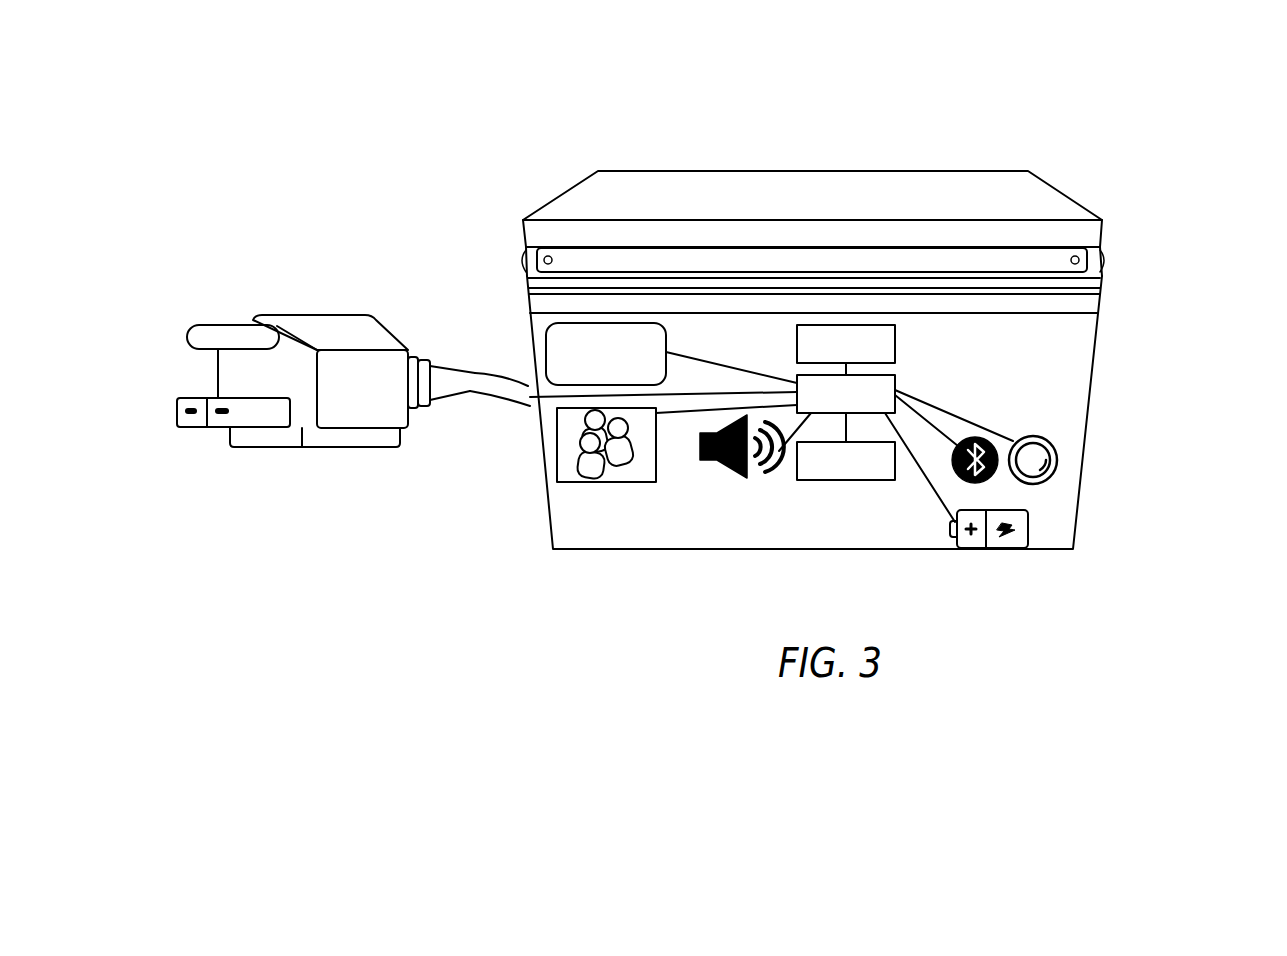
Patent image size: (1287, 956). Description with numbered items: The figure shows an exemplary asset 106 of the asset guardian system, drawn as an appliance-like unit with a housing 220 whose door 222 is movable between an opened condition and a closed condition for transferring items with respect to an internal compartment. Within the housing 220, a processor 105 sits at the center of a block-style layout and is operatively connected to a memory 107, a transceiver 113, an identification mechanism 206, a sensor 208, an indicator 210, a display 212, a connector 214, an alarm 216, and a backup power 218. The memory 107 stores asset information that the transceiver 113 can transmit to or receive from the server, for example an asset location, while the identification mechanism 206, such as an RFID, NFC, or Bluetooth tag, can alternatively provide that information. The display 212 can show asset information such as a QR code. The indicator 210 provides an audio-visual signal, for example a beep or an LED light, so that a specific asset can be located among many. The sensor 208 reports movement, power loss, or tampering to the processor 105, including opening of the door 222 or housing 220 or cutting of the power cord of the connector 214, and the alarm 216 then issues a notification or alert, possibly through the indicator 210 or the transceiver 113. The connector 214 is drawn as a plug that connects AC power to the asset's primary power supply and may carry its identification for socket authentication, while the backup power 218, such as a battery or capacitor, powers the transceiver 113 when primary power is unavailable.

The asset 106 is at (632, 112).
The display 212 is at (546, 340).
The door 222 is at (1103, 230).
The sensor 208 is at (895, 343).
The processor 105 is at (846, 394).
The memory 107 is at (846, 461).
The identification mechanism 206 is at (1059, 458).
The transceiver 113 is at (993, 478).
The backup power 218 is at (998, 549).
The housing 220 is at (903, 549).
The alarm 216 is at (706, 461).
The indicator 210 is at (590, 482).
The connector 214 is at (298, 447).